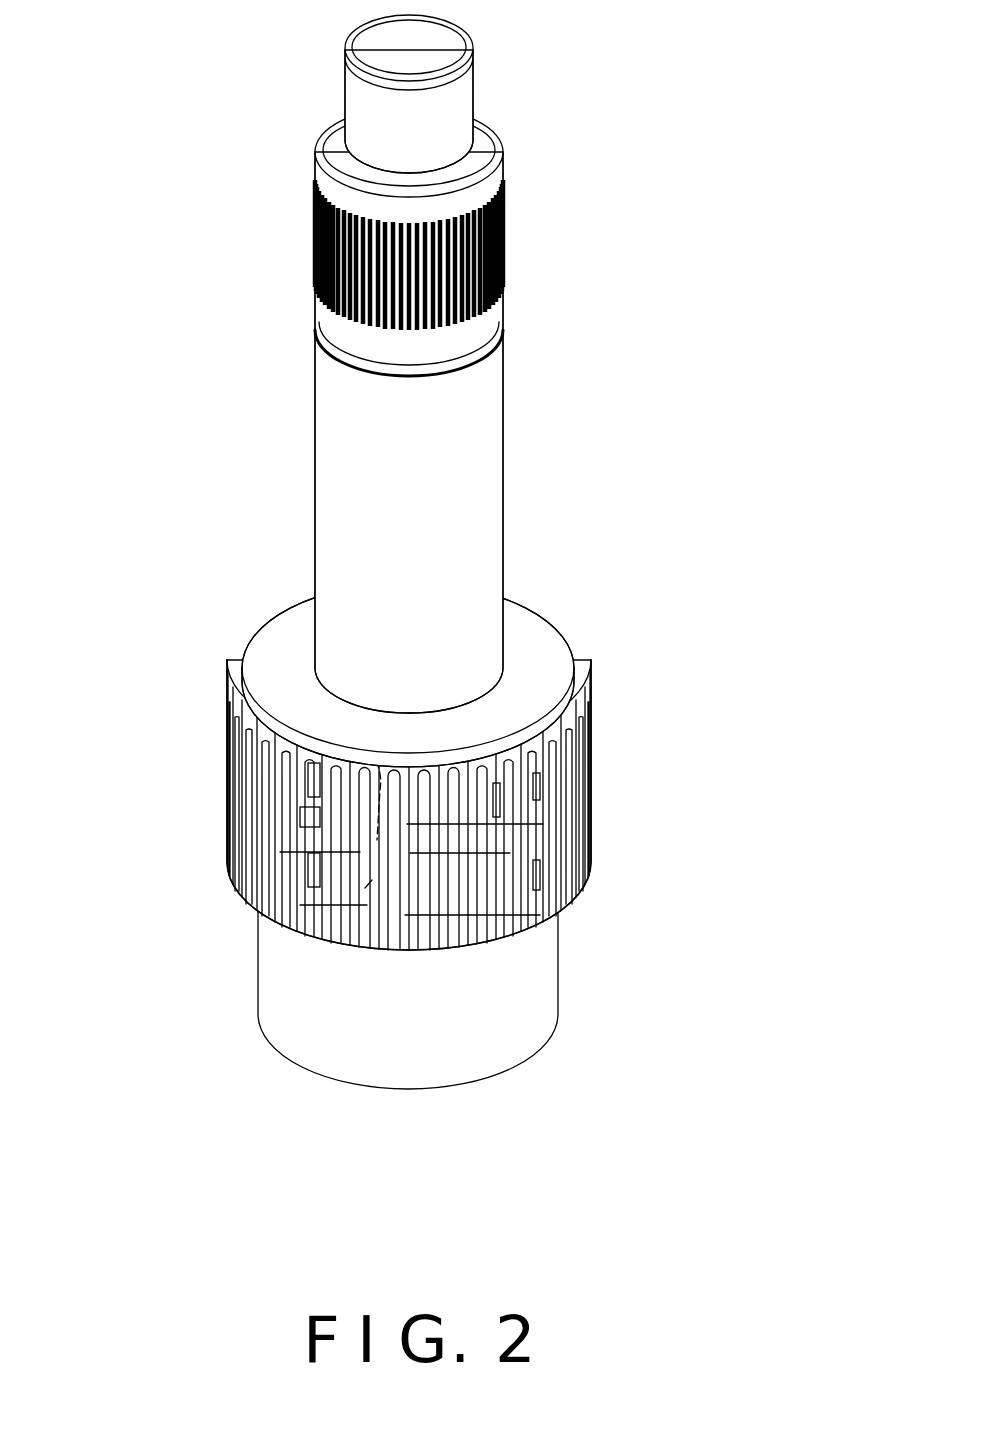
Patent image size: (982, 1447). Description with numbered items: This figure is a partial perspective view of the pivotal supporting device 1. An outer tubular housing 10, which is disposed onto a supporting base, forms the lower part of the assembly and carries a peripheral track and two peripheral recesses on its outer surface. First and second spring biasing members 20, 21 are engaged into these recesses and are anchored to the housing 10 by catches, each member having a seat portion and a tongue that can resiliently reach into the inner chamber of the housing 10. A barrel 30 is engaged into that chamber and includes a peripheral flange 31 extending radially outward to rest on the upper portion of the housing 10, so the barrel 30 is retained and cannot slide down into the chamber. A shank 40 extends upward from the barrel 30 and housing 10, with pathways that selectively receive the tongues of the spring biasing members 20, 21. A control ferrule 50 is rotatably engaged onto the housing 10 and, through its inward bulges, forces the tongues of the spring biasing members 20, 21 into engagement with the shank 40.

The pivotal supporting device 1 is at (560, 221).
The housing 10 is at (520, 1020).
The first spring biasing member 20 is at (300, 703).
The second spring biasing member 21 is at (365, 888).
The barrel 30 is at (455, 640).
The peripheral flange 31 is at (550, 630).
The shank 40 is at (490, 410).
The control ferrule 50 is at (578, 763).